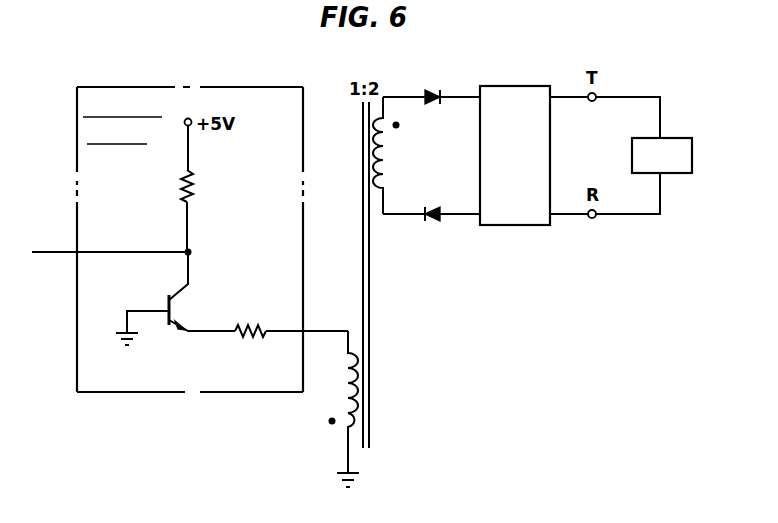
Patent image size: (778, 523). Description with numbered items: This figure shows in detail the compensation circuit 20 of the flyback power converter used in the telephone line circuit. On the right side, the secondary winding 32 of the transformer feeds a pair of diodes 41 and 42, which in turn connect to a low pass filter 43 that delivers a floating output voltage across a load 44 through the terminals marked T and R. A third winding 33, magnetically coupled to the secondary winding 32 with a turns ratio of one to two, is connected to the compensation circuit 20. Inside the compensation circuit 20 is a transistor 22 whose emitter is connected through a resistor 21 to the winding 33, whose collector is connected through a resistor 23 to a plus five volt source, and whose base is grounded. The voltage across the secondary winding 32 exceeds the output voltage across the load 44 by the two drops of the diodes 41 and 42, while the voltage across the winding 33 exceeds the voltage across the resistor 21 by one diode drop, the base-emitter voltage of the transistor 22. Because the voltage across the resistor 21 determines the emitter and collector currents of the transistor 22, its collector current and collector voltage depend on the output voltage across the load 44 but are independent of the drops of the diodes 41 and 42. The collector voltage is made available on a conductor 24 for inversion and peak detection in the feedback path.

The compensation circuit 20 is at (202, 67).
The resistor 21 is at (250, 343).
The transistor 22 is at (183, 311).
The resistor 23 is at (195, 184).
The conductor 24 is at (53, 252).
The secondary winding 32 is at (400, 157).
The third winding 33 is at (334, 396).
The diode 41 is at (433, 89).
The diode 42 is at (433, 206).
The low pass filter 43 is at (527, 67).
The load 44 is at (638, 137).